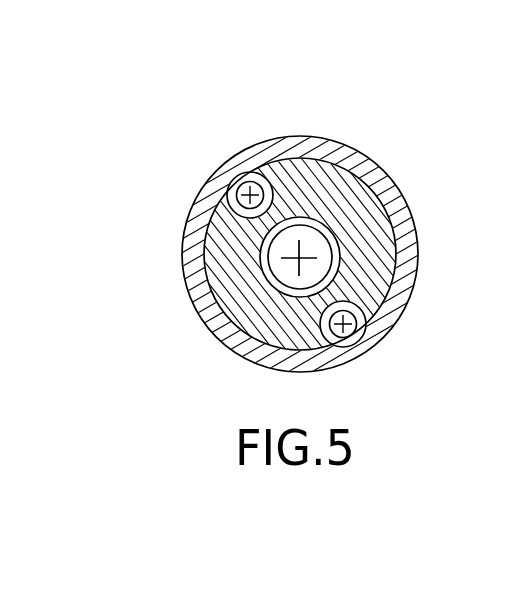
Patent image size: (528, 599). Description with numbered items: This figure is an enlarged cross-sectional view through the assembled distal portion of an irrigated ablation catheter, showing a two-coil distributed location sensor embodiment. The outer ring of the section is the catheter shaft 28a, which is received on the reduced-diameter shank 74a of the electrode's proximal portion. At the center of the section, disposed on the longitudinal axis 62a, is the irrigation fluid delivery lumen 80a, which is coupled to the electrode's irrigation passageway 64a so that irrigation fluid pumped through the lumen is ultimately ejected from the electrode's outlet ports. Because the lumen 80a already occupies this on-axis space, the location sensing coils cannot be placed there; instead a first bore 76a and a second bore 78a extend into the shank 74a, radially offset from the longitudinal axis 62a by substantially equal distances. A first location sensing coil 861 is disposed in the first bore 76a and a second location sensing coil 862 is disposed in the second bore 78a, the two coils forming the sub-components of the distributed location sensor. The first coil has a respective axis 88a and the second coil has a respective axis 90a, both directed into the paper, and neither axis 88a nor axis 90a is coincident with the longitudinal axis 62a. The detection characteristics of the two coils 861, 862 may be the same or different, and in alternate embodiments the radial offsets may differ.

The shaft 28a is at (258, 152).
The reduced-diameter shank 74a is at (340, 187).
The irrigation fluid delivery lumen 80a is at (305, 218).
The irrigation passageway 64a is at (317, 240).
The longitudinal axis 62a is at (296, 262).
The first bore 76a is at (205, 180).
The first location sensing coil 861 is at (194, 180).
The axis of first location sensing coil 88a is at (243, 197).
The second bore 78a is at (403, 364).
The second location sensing coil 862 is at (403, 364).
The axis of second location sensing coil 90a is at (350, 325).